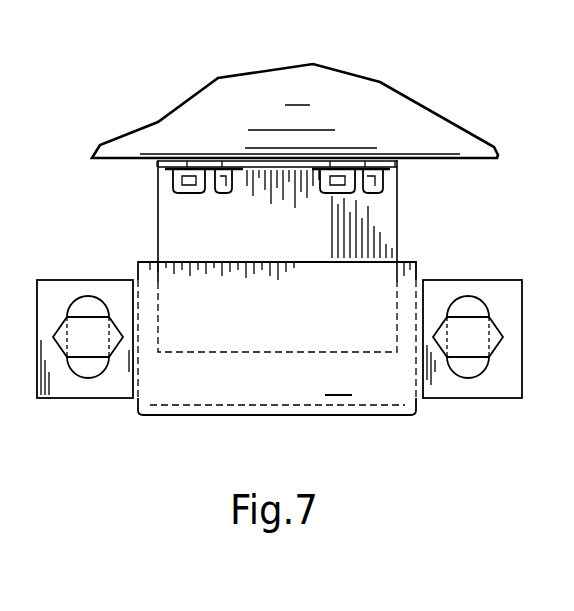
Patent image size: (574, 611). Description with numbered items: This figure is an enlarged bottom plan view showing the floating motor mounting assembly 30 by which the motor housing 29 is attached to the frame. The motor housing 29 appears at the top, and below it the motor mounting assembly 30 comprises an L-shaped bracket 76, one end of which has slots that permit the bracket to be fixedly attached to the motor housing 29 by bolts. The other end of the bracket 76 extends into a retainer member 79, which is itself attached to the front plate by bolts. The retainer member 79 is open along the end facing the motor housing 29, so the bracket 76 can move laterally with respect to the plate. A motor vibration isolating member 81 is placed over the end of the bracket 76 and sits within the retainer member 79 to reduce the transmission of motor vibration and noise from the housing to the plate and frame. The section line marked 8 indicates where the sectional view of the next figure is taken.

The section line 8- 8 is at (387, 76).
The motor housing 29 is at (426, 134).
The motor mounting assembly 30 is at (431, 441).
The L-shaped bracket 76 is at (383, 229).
The retainer member 79 is at (268, 397).
The motor vibration isolating member 81 is at (151, 262).